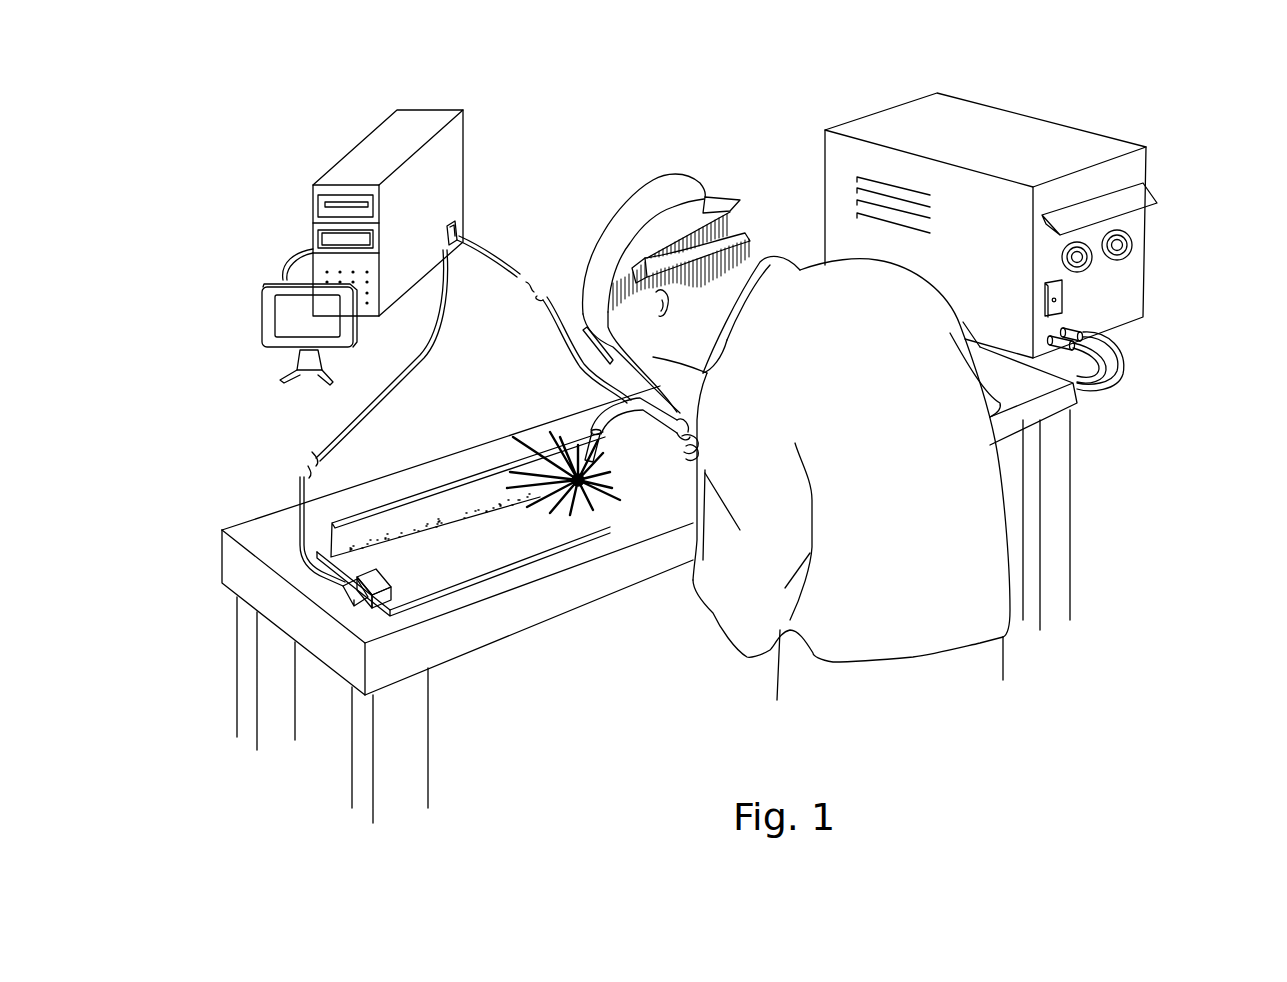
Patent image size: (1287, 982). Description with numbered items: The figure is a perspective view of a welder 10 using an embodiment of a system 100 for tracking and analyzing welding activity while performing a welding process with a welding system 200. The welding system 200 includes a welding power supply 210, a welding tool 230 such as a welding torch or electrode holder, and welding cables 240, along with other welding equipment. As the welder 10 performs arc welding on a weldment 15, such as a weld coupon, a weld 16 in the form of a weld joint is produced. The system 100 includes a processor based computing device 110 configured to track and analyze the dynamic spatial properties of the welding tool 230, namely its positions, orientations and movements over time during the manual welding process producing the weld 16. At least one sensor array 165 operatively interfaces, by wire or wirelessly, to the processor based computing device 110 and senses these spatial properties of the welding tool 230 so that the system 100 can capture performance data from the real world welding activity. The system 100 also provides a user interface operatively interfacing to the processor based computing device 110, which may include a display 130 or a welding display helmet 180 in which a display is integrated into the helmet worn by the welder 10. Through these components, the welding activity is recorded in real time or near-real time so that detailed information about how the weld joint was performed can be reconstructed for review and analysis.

The system for tracking and analyzing welding activity 100 is at (517, 110).
The processor based computing device 110 is at (365, 142).
The display 130 is at (262, 322).
The welding display helmet 180 is at (631, 185).
The welding power supply 210 is at (1040, 142).
The welding system 200 is at (1183, 295).
The welding tool 230 is at (600, 410).
The welding cables 240 is at (1117, 375).
The welder 10 is at (980, 541).
The weldment 15 is at (487, 557).
The weld 16 is at (470, 517).
The sensor array 165 is at (348, 598).